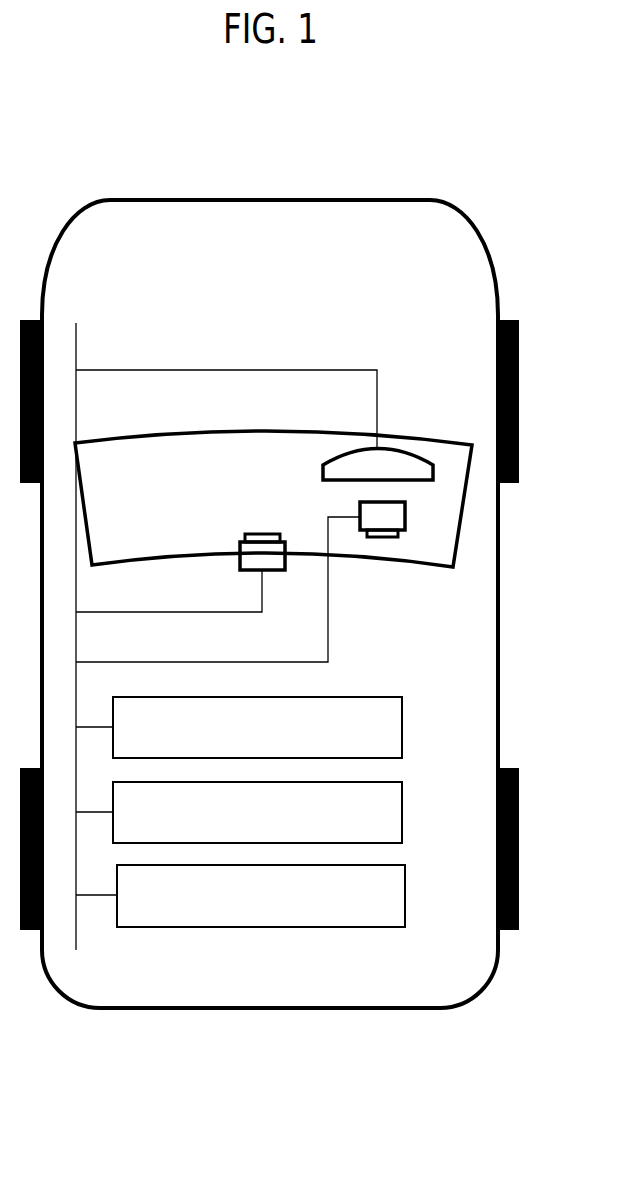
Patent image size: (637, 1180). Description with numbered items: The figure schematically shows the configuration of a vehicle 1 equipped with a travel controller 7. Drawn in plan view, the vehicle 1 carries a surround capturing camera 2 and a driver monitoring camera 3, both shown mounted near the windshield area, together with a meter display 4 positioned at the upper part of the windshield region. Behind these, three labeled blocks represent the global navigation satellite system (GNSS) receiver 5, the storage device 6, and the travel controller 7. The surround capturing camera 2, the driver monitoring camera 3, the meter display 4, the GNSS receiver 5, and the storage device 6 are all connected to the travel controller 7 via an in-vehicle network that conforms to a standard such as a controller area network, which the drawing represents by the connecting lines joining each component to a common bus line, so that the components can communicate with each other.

The vehicle 1 is at (402, 195).
The surround capturing camera 2 is at (238, 558).
The driver monitoring camera 3 is at (407, 527).
The meter display 4 is at (355, 447).
The global navigation satellite system (GNSS) receiver 5 is at (402, 730).
The storage device 6 is at (402, 827).
The travel controller 7 is at (405, 910).